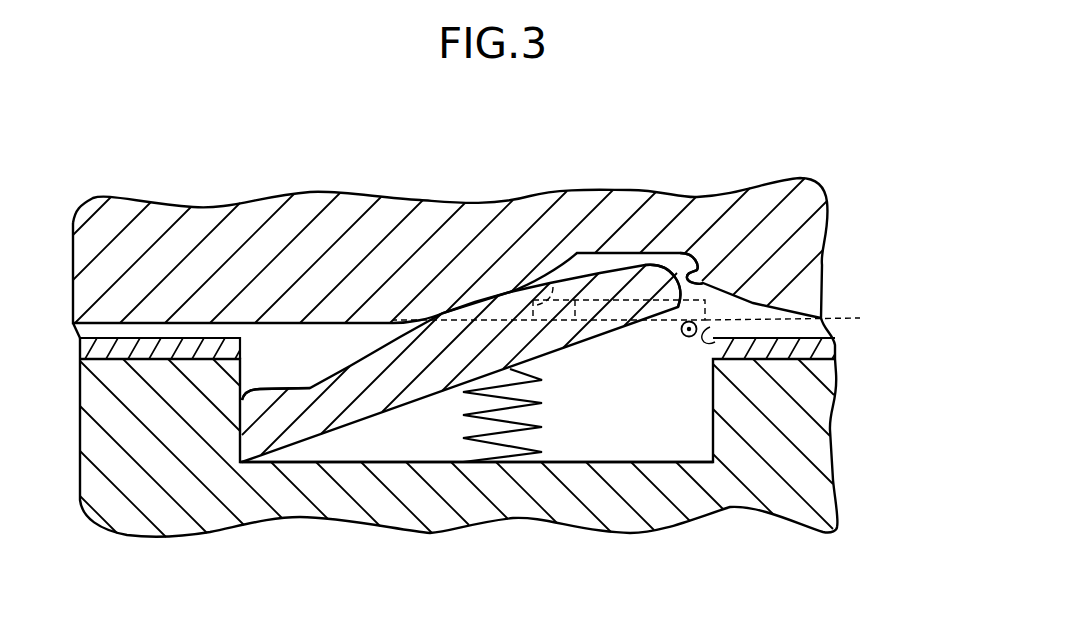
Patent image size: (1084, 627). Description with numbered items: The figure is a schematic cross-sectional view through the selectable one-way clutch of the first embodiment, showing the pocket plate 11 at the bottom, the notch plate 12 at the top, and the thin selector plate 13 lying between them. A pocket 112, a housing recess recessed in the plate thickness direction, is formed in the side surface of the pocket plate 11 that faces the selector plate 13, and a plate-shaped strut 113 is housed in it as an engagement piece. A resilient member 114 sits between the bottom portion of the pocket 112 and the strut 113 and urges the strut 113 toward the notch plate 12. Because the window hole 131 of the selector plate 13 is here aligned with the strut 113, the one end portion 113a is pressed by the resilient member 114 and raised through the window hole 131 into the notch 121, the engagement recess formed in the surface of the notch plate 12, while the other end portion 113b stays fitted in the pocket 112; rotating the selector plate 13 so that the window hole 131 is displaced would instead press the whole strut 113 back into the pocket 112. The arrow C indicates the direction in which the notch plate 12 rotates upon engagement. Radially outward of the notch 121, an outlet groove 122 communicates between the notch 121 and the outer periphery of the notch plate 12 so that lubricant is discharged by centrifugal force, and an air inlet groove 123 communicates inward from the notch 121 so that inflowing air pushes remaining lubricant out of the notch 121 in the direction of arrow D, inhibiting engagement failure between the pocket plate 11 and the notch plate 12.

The pocket plate 11 is at (833, 482).
The notch plate 12 is at (827, 202).
The selector plate 13 is at (837, 348).
The pocket 112 is at (650, 462).
The strut 113 is at (666, 330).
The one end portion of the strut 113a is at (647, 277).
The another end portion of the strut 113b is at (250, 452).
The resilient member 114 is at (471, 438).
The notch 121 is at (705, 279).
The outlet groove 122 is at (705, 292).
The air inlet groove 123 is at (553, 287).
The window hole 131 is at (710, 327).
The arrow D is at (689, 337).
The arrow C is at (848, 164).